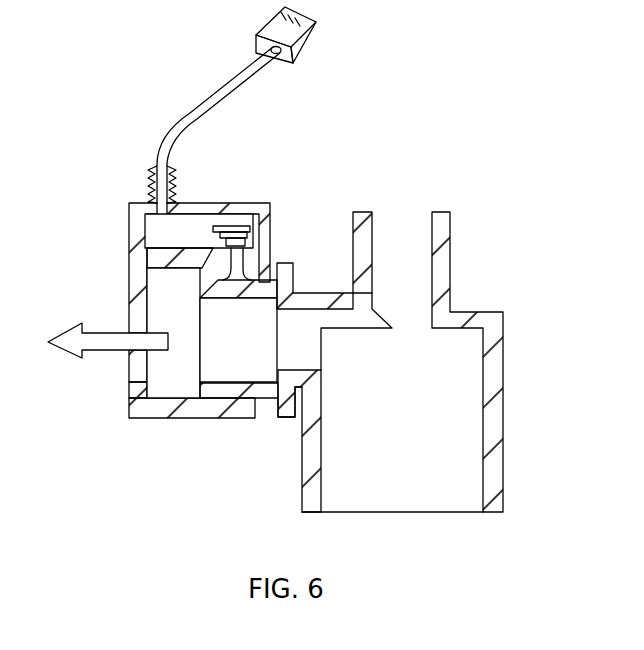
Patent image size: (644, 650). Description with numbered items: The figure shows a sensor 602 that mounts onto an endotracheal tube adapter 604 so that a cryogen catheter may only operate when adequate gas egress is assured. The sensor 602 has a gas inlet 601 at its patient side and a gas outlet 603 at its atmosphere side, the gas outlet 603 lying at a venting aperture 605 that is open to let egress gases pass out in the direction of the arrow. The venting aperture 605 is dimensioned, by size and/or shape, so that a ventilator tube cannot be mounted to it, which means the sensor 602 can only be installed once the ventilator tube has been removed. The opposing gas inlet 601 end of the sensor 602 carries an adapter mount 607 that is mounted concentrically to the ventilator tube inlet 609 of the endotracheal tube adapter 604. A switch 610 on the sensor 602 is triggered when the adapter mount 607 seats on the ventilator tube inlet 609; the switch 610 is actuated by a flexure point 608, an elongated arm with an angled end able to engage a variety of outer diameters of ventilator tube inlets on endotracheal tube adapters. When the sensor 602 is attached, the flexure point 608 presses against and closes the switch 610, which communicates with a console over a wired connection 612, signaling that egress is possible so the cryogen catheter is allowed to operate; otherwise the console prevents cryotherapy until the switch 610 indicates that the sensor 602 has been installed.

The gas inlet 601 is at (200, 362).
The sensor 602 is at (182, 418).
The gas outlet 603 is at (120, 350).
The endotracheal tube adapter 604 is at (505, 430).
The venting aperture 605 is at (130, 268).
The adapter mount 607 is at (242, 418).
The flexure point 608 is at (231, 262).
The ventilator tube inlet 609 is at (273, 265).
The switch 610 is at (240, 224).
The wired connection 612 is at (190, 110).